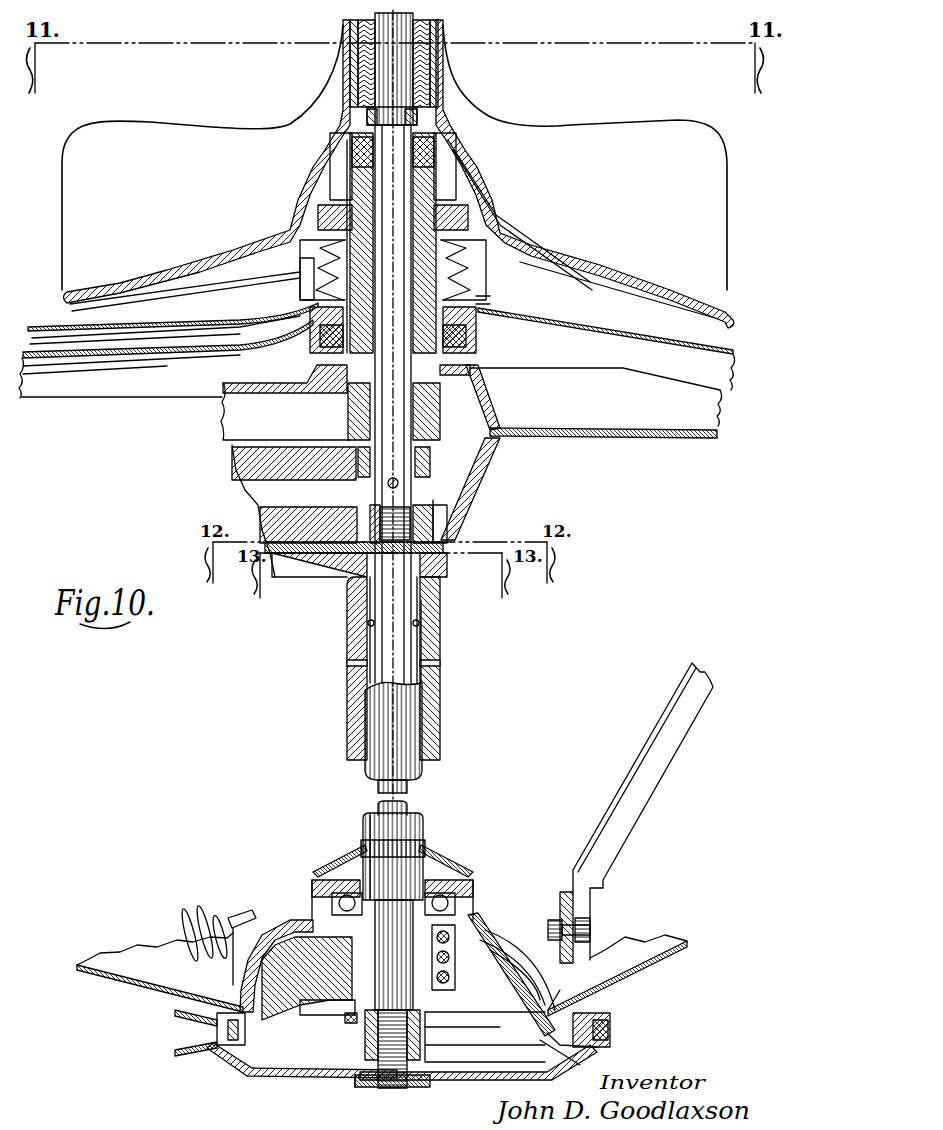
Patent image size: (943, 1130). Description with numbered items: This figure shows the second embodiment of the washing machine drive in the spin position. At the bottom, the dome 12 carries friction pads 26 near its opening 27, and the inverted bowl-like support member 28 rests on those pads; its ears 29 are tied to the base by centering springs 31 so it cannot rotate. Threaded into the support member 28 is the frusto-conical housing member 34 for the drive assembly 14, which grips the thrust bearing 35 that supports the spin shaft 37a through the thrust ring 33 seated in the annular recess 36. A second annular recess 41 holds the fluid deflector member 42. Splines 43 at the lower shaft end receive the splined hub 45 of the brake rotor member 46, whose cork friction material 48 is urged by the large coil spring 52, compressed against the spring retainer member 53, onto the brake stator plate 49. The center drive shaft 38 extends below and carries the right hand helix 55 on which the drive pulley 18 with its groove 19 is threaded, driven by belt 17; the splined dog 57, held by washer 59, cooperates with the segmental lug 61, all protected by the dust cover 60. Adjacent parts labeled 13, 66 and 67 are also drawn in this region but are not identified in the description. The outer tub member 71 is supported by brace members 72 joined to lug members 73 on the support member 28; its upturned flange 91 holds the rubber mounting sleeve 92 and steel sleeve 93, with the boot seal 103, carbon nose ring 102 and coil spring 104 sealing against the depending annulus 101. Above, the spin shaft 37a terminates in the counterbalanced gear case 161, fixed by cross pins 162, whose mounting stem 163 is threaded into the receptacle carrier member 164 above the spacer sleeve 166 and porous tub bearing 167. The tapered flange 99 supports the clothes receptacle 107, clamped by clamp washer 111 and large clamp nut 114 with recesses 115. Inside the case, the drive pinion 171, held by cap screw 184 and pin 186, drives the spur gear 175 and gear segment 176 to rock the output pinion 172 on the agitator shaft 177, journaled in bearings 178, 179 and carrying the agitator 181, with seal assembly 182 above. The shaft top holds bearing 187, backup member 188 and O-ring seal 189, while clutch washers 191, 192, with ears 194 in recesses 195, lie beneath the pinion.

The agitator 181 is at (600, 135).
The perforate clothes receptacle 107 is at (585, 288).
The clamp washer 111 is at (472, 213).
The tapered receptacle supporting flange 99 is at (493, 260).
The bearing 179 is at (370, 213).
The steel spacer sleeve 166 is at (352, 282).
The porous tub bearing 167 is at (350, 308).
The mounting stem 163 is at (362, 347).
The seal assembly 182 is at (432, 160).
The large clamp nut 114 is at (447, 172).
The diametrically opposed recesses 115 is at (455, 177).
The carbon nose ring 102 is at (467, 267).
The coil spring 104 is at (467, 288).
The depending annulus 101 is at (457, 243).
The boot seal 103 is at (320, 283).
The receptacle carrier member 164 is at (300, 270).
The steel sleeve 93 is at (477, 328).
The upturned flange 91 is at (470, 300).
The rubber mounting sleeve 92 is at (470, 305).
The outer tub member 71 is at (137, 390).
The agitator shaft 177 is at (383, 410).
The bearing 178 is at (413, 423).
The counterbalanced gear case 161 is at (487, 467).
The output pinion 172 is at (430, 453).
The cap screw 184 is at (410, 476).
The gear segment 176 is at (305, 480).
The spur gear 175 is at (320, 510).
The pin 186 is at (372, 505).
The drive pinion 171 is at (430, 507).
The upper clutch washer 191 is at (443, 540).
The lower clutch washer 192 is at (443, 557).
The ears 194 is at (330, 577).
The mating recesses 195 is at (312, 577).
The cross pins 162 is at (347, 663).
The O-ring shaft seal 189 is at (367, 623).
The bearing 187 is at (420, 613).
The annular steel backup member 188 is at (420, 637).
The center drive shaft 38 is at (410, 805).
The spin shaft 37a is at (423, 813).
The annular recess 41 is at (385, 847).
The annular recess 36 is at (383, 887).
The fluid deflector member 42 is at (340, 867).
The thrust ring 33 is at (433, 848).
The thrust bearing 35 is at (473, 883).
The splines 43 is at (380, 923).
The housing member 34 is at (512, 990).
The splined hub 45 is at (357, 975).
The brake rotor member 46 is at (318, 1007).
The seal 67 is at (353, 1017).
The drive pulley 18 is at (233, 1077).
The groove 19 is at (177, 1027).
The deck plate 13 is at (633, 982).
The centering springs 31 is at (207, 907).
The ears 29 is at (238, 913).
The brace members 72 is at (647, 738).
The lug members 73 is at (543, 893).
The support member 28 is at (503, 938).
The friction pads 26 is at (547, 970).
The drive assembly 14 is at (487, 953).
The opening 27 is at (487, 960).
The dome 12 is at (493, 978).
The spring retainer member 53 is at (449, 940).
The large coil spring 52 is at (449, 978).
The belt 17 is at (613, 1023).
The ring 66 is at (440, 1025).
The right hand helix 55 is at (432, 1045).
The splined dog 57 is at (363, 1090).
The washer 59 is at (407, 1090).
The segmental lug 61 is at (423, 1090).
The snap-on rubber dust cover 60 is at (360, 1087).
The brake stator plate 49 is at (503, 1073).
The friction material 48 is at (537, 1053).